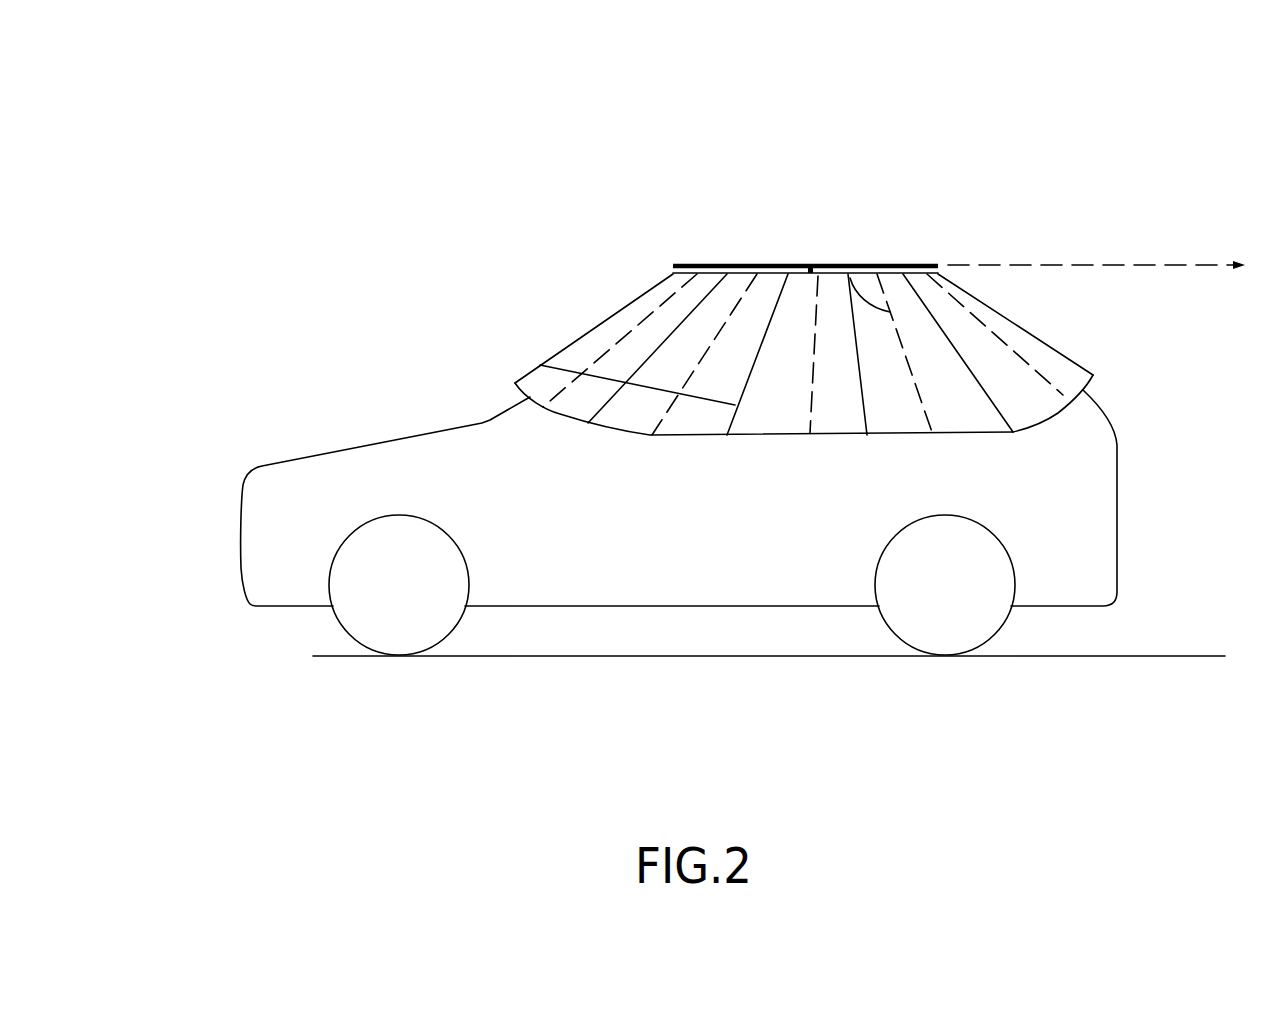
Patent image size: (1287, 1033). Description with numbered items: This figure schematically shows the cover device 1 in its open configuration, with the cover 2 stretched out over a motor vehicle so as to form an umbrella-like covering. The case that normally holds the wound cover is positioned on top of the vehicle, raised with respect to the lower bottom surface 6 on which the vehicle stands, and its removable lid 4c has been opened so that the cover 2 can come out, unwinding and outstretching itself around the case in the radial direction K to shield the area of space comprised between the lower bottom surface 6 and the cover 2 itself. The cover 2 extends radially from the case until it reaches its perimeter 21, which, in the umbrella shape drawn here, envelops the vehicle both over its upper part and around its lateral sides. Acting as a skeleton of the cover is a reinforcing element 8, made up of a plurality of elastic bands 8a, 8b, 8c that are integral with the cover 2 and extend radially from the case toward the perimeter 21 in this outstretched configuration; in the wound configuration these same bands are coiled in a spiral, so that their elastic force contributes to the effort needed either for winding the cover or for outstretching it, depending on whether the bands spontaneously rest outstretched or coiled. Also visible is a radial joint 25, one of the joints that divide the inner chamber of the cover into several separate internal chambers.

The cover device 1 is at (622, 253).
The cover 2 is at (587, 333).
The removable lid 4c is at (863, 265).
The lower bottom surface 6 is at (1205, 653).
The reinforcing element 8 is at (967, 312).
The elastic band 8a is at (848, 273).
The elastic band 8b is at (818, 295).
The elastic band 8c is at (742, 292).
The perimeter of the cover 21 is at (1013, 432).
The radial joint 25 is at (540, 365).
The radial direction K is at (1230, 262).